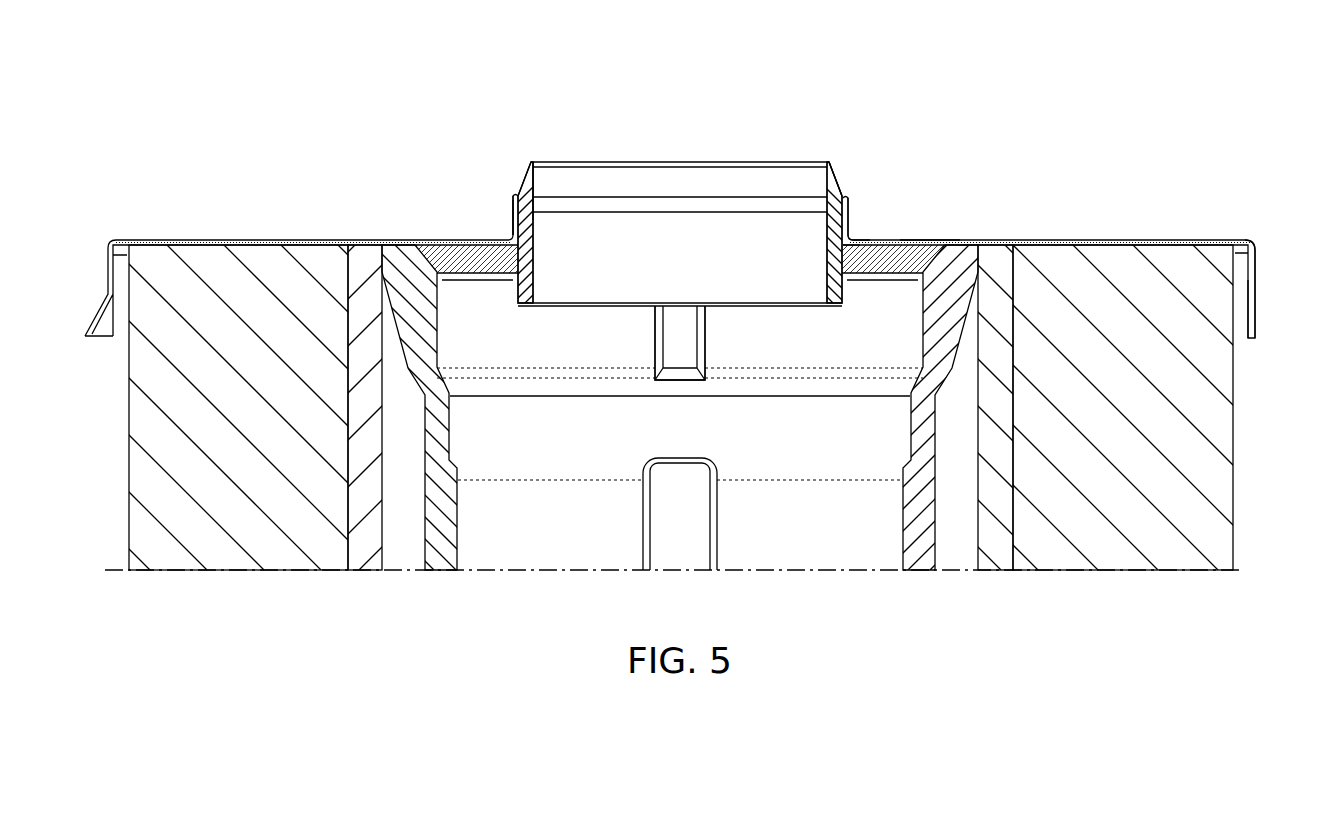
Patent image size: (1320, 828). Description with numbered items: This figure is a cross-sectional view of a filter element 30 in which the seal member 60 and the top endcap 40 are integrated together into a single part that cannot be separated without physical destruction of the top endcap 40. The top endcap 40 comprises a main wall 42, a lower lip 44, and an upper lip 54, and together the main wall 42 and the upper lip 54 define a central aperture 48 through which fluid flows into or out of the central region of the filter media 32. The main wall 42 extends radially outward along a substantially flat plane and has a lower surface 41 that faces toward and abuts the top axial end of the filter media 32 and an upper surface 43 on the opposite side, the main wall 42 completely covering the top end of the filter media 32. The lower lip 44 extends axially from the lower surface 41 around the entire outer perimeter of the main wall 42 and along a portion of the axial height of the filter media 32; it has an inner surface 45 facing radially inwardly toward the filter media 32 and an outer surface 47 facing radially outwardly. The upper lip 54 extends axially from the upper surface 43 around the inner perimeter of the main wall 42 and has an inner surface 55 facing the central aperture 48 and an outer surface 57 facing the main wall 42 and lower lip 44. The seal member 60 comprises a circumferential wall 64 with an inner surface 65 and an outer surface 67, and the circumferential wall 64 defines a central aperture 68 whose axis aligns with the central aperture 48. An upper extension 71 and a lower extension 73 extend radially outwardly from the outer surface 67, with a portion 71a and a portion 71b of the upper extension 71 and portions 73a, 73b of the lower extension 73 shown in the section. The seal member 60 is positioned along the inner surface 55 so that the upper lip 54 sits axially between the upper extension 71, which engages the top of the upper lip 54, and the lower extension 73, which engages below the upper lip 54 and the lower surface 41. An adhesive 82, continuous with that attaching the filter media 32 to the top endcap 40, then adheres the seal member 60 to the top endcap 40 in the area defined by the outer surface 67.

The sensor unit 30 is at (1143, 135).
The filter media 32 is at (1215, 474).
The top endcap 40 is at (702, 282).
The lower surface 41 is at (448, 245).
The main wall 42 is at (296, 240).
The upper surface 43 is at (263, 240).
The lower lip 44 is at (1257, 298).
The inner surface 45 is at (1244, 318).
The outer surface 47 is at (1257, 263).
The central aperture 48 is at (713, 243).
The upper lip 54 is at (515, 225).
The inner surface 55 is at (537, 198).
The outer surface 57 is at (517, 212).
The seal member 60 is at (679, 192).
The circumferential wall 64 is at (617, 178).
The inner surface 65 is at (657, 192).
The outer surface 67 is at (514, 218).
The central aperture 68 is at (713, 243).
The upper extension 71 is at (847, 198).
The side wall upper end 71a is at (845, 190).
The side wall lower end 71b is at (847, 205).
The lower extension 73 is at (862, 250).
The sealing portion upper end 73a is at (847, 232).
The sealing portion corner 73b is at (847, 247).
The adhesive 82 is at (905, 243).